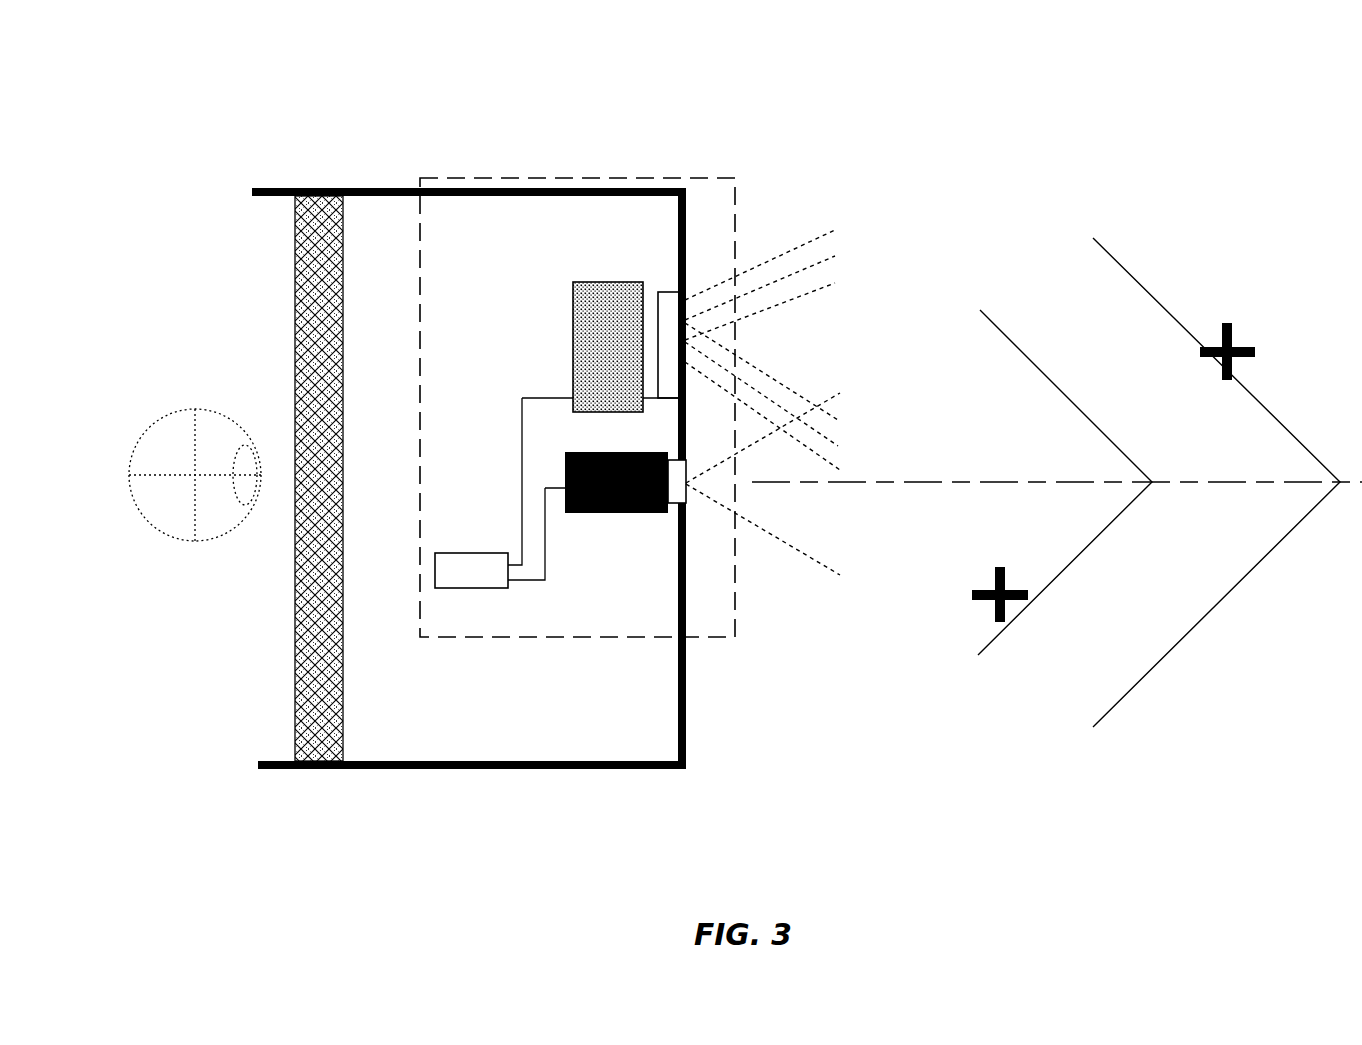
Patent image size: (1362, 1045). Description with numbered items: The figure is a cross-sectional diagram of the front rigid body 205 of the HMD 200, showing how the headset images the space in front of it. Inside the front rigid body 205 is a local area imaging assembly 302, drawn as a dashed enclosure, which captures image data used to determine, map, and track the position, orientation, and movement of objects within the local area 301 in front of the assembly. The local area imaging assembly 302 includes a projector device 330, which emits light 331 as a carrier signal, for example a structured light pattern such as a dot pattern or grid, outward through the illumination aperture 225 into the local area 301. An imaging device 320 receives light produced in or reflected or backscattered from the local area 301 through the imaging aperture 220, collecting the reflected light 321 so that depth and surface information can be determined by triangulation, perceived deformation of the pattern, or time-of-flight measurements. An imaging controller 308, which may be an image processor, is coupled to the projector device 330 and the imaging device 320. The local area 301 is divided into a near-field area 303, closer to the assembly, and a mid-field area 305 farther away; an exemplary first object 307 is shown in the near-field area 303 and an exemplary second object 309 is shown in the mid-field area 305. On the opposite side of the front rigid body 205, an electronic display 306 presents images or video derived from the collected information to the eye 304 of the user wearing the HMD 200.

The HMD 200 is at (344, 110).
The front rigid body 205 is at (615, 769).
The imaging aperture 220 is at (688, 503).
The illumination aperture 225 is at (686, 318).
The local area 301 is at (1074, 180).
The local area imaging assembly 302 is at (522, 637).
The near-field area 303 is at (1018, 615).
The eye 304 is at (183, 540).
The mid-field area 305 is at (1167, 655).
The electronic display 306 is at (343, 672).
The first object 307 is at (985, 588).
The imaging controller 308 is at (465, 588).
The second object 309 is at (1240, 340).
The imaging device 320 is at (583, 513).
The reflected light 321 is at (812, 555).
The projector device 330 is at (610, 282).
The emitted light 331 is at (800, 245).